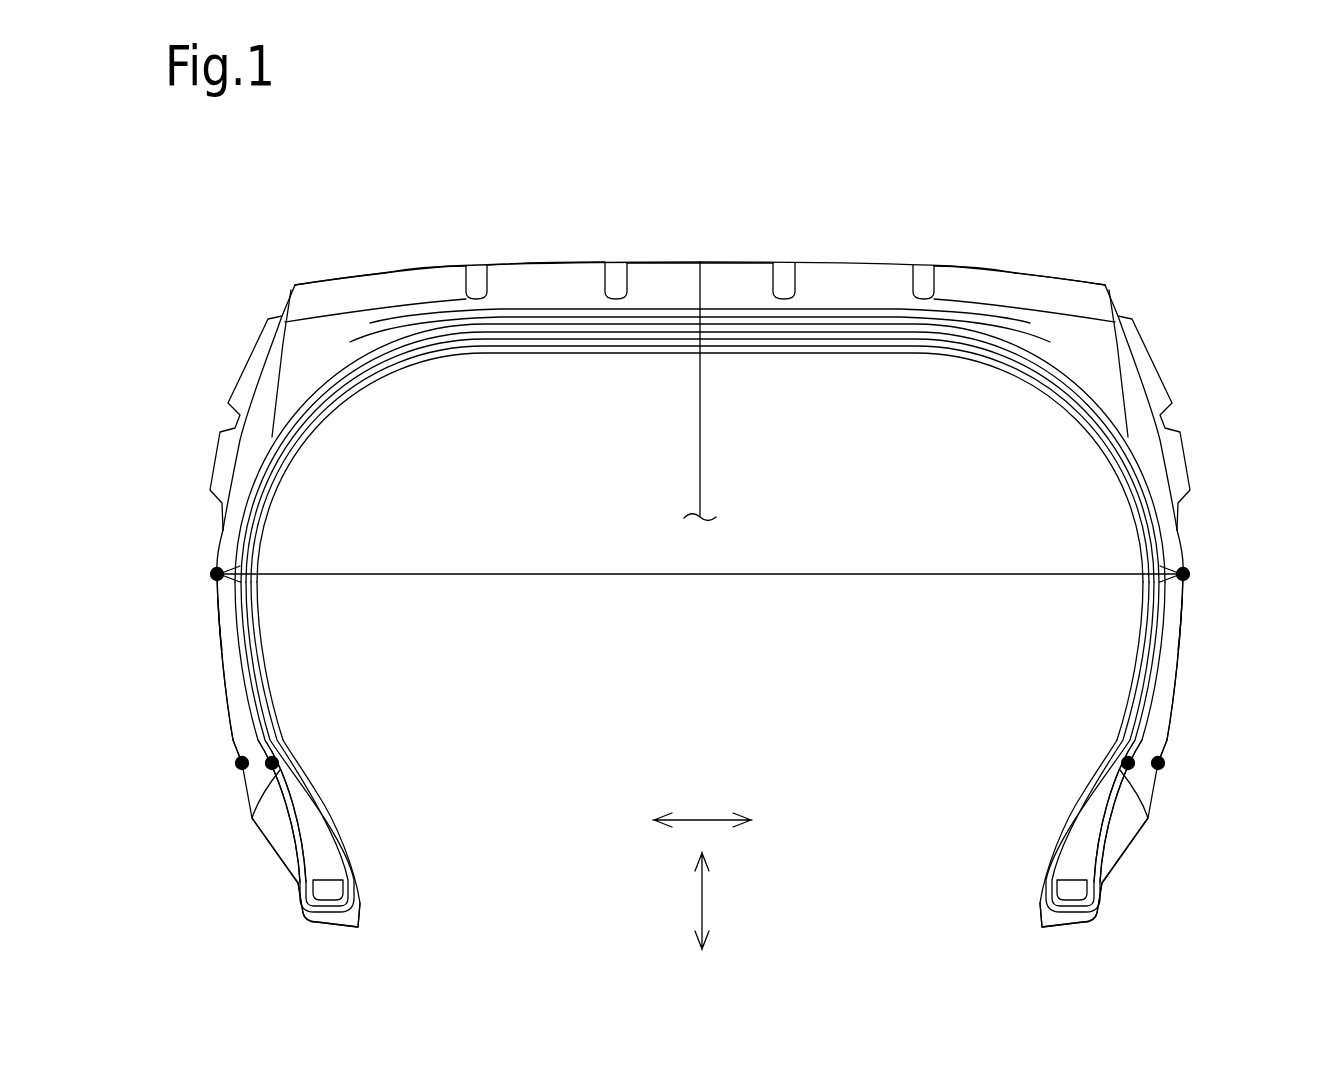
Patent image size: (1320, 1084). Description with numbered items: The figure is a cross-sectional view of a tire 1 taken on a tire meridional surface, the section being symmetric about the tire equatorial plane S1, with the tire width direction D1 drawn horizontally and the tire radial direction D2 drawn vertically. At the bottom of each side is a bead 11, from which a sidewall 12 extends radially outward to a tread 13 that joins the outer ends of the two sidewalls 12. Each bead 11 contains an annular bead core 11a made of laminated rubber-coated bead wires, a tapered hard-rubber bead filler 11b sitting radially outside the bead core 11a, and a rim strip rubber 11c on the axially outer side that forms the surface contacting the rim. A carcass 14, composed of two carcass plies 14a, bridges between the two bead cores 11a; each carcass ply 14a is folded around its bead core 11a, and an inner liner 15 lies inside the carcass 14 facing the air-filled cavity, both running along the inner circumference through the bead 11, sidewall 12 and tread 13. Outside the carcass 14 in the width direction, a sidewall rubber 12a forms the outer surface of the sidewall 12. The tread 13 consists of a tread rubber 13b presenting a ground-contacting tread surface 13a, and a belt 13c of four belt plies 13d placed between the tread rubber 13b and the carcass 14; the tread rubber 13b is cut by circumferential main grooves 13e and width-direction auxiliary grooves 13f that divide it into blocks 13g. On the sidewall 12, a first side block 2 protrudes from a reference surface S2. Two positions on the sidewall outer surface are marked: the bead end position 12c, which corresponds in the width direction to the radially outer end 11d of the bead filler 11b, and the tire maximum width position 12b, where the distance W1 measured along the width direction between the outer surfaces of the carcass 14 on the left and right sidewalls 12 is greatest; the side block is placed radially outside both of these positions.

The tire 1 is at (1207, 196).
The first side block 2 is at (244, 352).
The bead 11 is at (259, 911).
The bead core 11a is at (333, 895).
The bead filler 11b is at (318, 840).
The rim strip rubber 11c is at (285, 848).
The outer end of the bead filler 11d is at (279, 763).
The sidewall 12 is at (216, 533).
The sidewall rubber 12a is at (225, 620).
The tire maximum width position 12b is at (210, 575).
The bead end position 12c is at (235, 764).
The tread 13 is at (757, 247).
The tread surface 13a is at (550, 261).
The tread rubber 13b is at (662, 262).
The belt 13c is at (877, 316).
The belt ply 13d is at (907, 344).
The main groove 13e is at (477, 264).
The auxiliary groove 13f is at (369, 267).
The block 13g is at (403, 268).
The carcass 14 is at (570, 346).
The carcass ply 14a is at (333, 398).
The inner liner 15 is at (771, 355).
The tire equatorial plane S1 is at (699, 482).
The reference surface S2 is at (241, 388).
The distance W1 is at (700, 583).
The tire width direction D1 is at (702, 813).
The tire radial direction D2 is at (713, 901).